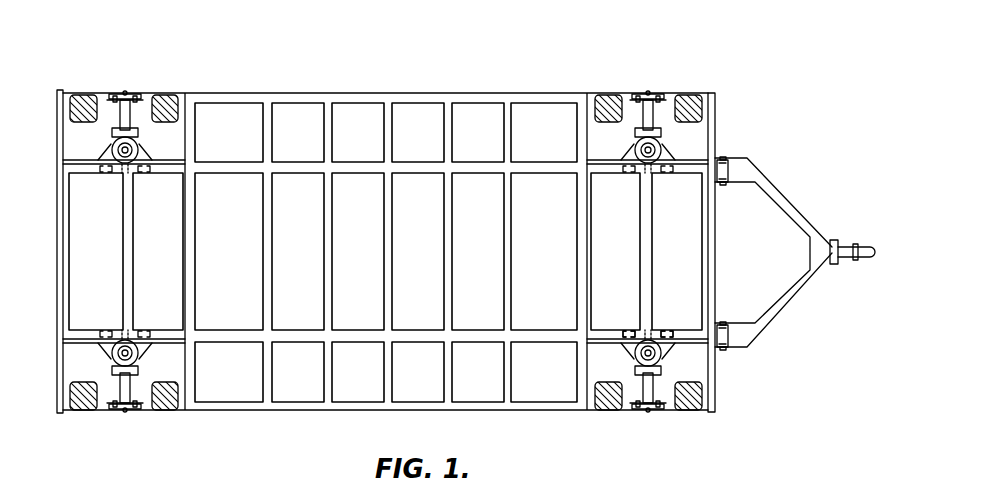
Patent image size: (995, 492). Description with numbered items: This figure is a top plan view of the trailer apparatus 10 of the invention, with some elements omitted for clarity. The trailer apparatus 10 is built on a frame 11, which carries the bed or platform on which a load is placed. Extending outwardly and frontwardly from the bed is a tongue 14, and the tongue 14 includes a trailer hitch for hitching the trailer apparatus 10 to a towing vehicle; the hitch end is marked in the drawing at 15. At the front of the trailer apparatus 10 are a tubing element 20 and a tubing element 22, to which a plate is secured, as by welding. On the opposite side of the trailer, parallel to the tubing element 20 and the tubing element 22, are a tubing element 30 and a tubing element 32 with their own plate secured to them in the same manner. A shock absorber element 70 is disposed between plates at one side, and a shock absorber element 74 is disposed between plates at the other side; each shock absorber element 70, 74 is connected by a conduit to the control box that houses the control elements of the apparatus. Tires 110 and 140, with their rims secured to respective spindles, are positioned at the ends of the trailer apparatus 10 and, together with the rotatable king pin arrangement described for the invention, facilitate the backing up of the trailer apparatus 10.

The trailer apparatus 10 is at (482, 70).
The frame 11 is at (333, 93).
The tongue 14 is at (790, 201).
The hitch coupler 15 is at (873, 251).
The tubing element 20 is at (660, 177).
The tubing element 22 is at (636, 177).
The tubing element 30 is at (662, 328).
The tubing element 32 is at (634, 331).
The shock absorber element 70 is at (663, 145).
The shock absorber element 74 is at (662, 352).
The tire 110 is at (692, 95).
The tire 140 is at (690, 410).